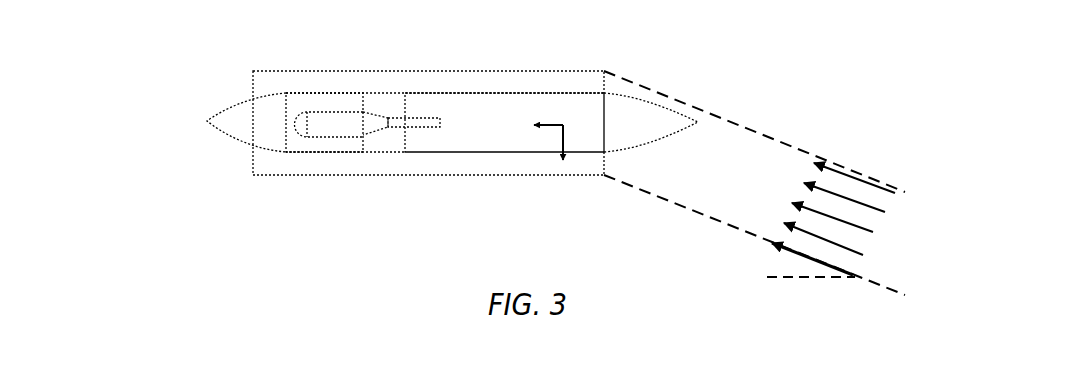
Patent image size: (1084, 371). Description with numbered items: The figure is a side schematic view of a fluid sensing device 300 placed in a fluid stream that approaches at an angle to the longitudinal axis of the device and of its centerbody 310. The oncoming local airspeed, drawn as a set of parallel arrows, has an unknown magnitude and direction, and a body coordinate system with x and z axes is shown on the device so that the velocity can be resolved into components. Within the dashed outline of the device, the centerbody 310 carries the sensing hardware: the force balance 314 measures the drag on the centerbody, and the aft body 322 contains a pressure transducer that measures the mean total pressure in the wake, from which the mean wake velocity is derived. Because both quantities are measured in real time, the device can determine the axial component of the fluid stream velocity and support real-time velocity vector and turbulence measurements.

The fluid sensing device 300 is at (672, 70).
The centerbody 310 is at (572, 93).
The aft body 322 is at (318, 93).
The force balance 314 is at (379, 118).